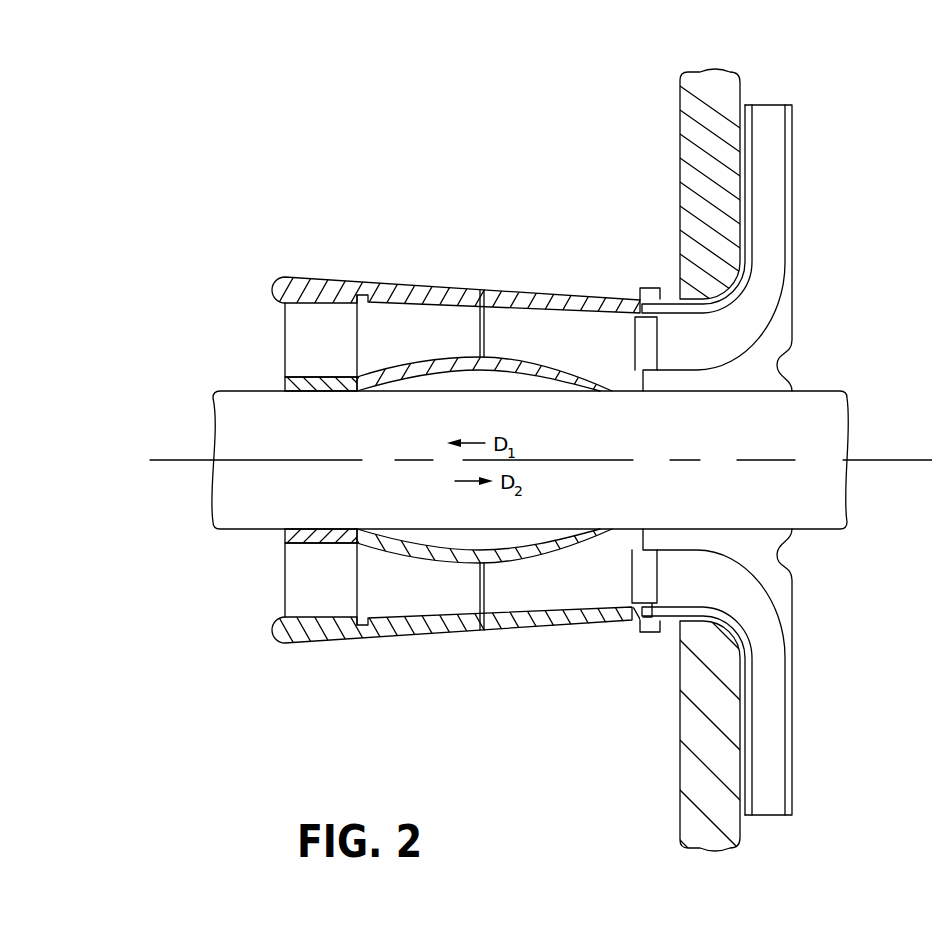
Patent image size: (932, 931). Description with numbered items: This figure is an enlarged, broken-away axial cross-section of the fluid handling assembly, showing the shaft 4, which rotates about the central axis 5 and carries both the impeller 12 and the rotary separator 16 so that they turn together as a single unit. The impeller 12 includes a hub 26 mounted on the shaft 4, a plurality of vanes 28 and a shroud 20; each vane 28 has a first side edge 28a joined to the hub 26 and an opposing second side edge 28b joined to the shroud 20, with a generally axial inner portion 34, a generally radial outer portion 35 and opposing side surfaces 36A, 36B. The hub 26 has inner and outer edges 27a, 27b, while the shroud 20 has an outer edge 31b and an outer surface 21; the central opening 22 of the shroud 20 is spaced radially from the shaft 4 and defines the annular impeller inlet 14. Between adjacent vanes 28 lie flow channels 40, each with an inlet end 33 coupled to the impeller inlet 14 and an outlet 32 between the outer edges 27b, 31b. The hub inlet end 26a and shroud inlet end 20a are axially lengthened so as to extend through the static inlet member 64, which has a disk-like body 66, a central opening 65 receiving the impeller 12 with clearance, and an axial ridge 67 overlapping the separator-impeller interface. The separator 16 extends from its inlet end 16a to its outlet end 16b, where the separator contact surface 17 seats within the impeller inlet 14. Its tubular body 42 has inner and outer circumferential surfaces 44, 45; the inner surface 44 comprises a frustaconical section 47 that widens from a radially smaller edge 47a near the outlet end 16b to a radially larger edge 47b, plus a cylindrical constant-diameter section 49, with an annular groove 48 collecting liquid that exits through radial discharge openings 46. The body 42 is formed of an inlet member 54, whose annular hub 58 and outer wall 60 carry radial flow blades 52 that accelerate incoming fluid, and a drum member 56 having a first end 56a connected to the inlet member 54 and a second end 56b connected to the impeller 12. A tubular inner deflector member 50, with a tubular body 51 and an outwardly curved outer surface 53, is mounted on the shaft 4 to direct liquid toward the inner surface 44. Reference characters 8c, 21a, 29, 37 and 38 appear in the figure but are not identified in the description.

The shaft 4 is at (174, 408).
The central axis 5 is at (163, 463).
The inner case edge 8c is at (481, 273).
The impeller 12 is at (826, 259).
The impeller inlet 14 is at (575, 343).
The rotary separator 16 is at (374, 244).
The separator inlet end 16a is at (252, 279).
The separator outlet end 16b is at (672, 322).
The separator contact surface 17 is at (655, 340).
The shroud 20 is at (732, 221).
The shroud inlet end 20a is at (671, 312).
The shroud outer surface 21 is at (742, 150).
The case flange 21a is at (645, 308).
The shroud central opening 22 is at (630, 592).
The hub 26 is at (795, 341).
The hub inlet end 26a is at (651, 545).
The hub inner edge 27a is at (638, 392).
The hub outer edge 27b is at (792, 104).
The vane 28 is at (792, 207).
The vane first side edge 28a is at (786, 240).
The vane second side edge 28b is at (780, 103).
The top surface 29 is at (775, 112).
The shroud outer edge 31b is at (752, 100).
The flow channel outlet 32 is at (768, 104).
The flow channel inlet end 33 is at (656, 572).
The vane axial inner portion 34 is at (702, 348).
The vane radial outer portion 35 is at (773, 190).
The vane side surface 36A is at (778, 638).
The vane side surface 36B is at (786, 266).
The transition curve 37 is at (757, 670).
The elastomer block 38 is at (768, 718).
The flow channel 40 is at (758, 292).
The tubular body 42 is at (435, 269).
The inner circumferential surface 44 is at (551, 323).
The outer circumferential surface 45 is at (555, 280).
The discharge openings 46 is at (483, 292).
The frustaconical surface section 47 is at (575, 343).
The first circumferential edge 47a is at (484, 353).
The second circumferential edge 47b is at (638, 366).
The annular groove 48 is at (481, 320).
The cylindrical surface section 49 is at (430, 303).
The inner deflector member 50 is at (433, 580).
The deflector tubular body 51 is at (527, 597).
The flow blades 52 is at (300, 331).
The deflector outer surface 53 is at (412, 362).
The inlet member 54 is at (301, 264).
The drum member 56 is at (528, 283).
The drum member first end 56a is at (366, 300).
The drum member second end 56b is at (660, 305).
The inlet member hub 58 is at (288, 542).
The annular outer wall 60 is at (290, 640).
The static compressor inlet member 64 is at (663, 94).
The central opening 65 is at (673, 625).
The circular body 66 is at (693, 128).
The circular ridge 67 is at (660, 617).